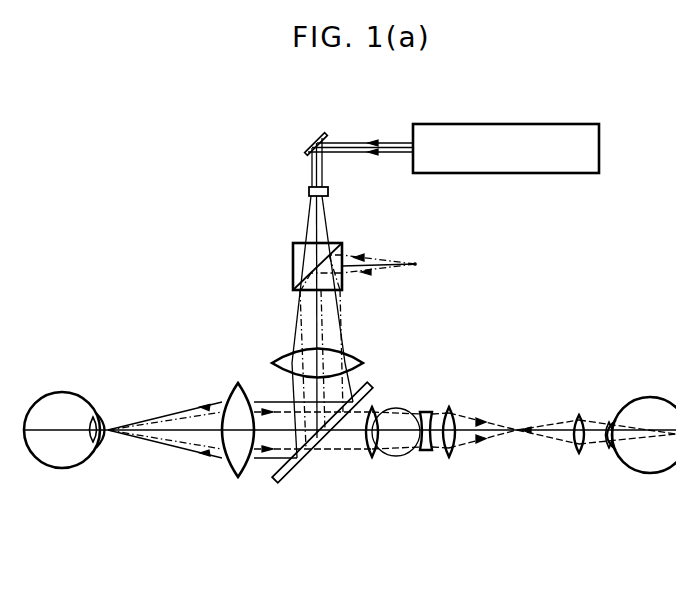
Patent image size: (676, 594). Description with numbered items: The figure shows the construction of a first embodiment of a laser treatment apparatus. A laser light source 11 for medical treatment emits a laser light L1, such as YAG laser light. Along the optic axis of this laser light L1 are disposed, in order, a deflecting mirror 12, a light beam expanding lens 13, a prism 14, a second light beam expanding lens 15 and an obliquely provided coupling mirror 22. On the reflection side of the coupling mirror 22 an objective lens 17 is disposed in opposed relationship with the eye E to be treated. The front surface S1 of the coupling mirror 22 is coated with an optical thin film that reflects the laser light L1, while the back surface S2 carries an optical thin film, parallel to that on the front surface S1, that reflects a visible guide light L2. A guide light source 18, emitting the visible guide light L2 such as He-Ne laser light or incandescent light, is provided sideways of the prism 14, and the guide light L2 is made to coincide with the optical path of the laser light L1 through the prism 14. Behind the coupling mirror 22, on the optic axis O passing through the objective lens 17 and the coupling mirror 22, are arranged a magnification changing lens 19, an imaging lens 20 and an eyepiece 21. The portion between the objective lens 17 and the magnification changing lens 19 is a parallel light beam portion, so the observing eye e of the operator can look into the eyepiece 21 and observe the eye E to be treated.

The laser light source 11 is at (526, 165).
The deflecting mirror 12 is at (307, 134).
The light beam expanding lens 13 is at (309, 190).
The prism 14 is at (293, 262).
The light beam expanding lens 15 is at (363, 360).
The objective lens 17 is at (228, 395).
The guide light source 18 is at (415, 264).
The magnification changing lens 19 is at (397, 462).
The imaging lens 20 is at (455, 456).
The eyepiece 21 is at (578, 455).
The coupling mirror 22 is at (280, 483).
The laser light for medical treatment L1 is at (358, 140).
The visible guide light L2 is at (372, 259).
The front surface S1 is at (272, 472).
The back surface S2 is at (290, 467).
The optic axis O is at (346, 434).
The eye to be treated E is at (75, 466).
The observing eye e is at (628, 470).